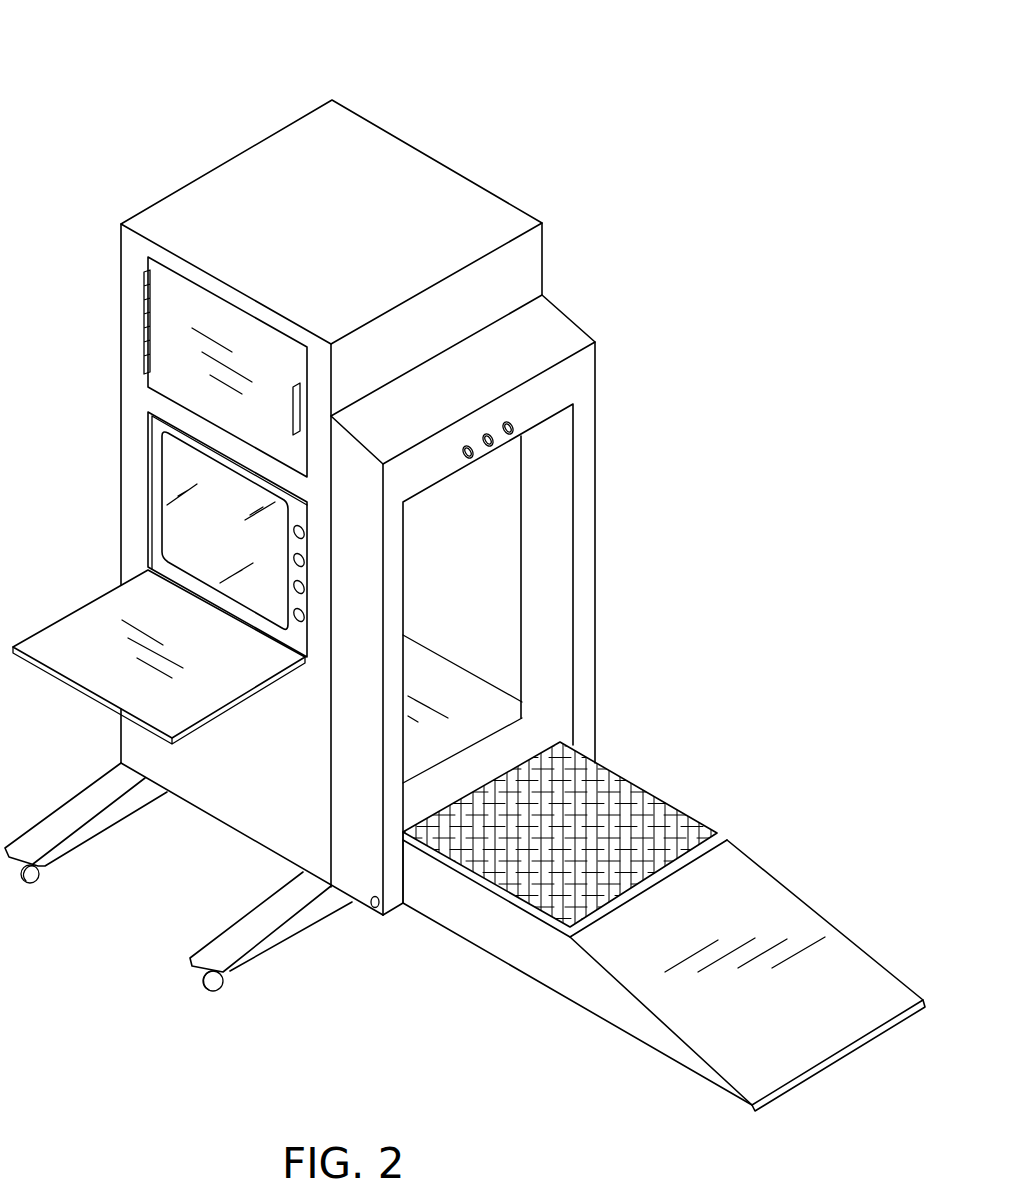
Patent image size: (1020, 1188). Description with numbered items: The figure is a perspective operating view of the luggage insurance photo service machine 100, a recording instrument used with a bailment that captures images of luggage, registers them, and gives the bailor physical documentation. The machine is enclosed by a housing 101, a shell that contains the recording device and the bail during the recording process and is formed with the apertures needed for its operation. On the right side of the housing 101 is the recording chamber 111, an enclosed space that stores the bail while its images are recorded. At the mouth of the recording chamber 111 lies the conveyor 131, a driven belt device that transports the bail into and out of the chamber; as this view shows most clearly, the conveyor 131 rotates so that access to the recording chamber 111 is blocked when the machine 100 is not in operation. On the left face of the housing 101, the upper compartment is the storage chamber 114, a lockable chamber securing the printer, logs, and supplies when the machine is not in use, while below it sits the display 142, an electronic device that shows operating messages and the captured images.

The luggage insurance photo service machine 100 is at (96, 92).
The housing 101 is at (452, 170).
The recording chamber 111 is at (472, 565).
The storage chamber 114 is at (190, 348).
The display 142 is at (190, 507).
The conveyor 131 is at (723, 883).